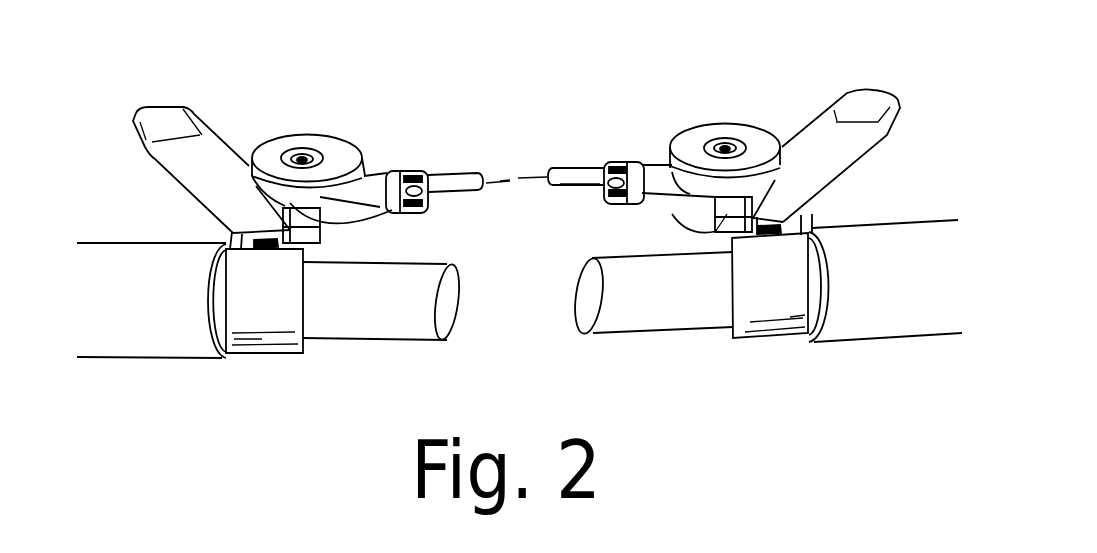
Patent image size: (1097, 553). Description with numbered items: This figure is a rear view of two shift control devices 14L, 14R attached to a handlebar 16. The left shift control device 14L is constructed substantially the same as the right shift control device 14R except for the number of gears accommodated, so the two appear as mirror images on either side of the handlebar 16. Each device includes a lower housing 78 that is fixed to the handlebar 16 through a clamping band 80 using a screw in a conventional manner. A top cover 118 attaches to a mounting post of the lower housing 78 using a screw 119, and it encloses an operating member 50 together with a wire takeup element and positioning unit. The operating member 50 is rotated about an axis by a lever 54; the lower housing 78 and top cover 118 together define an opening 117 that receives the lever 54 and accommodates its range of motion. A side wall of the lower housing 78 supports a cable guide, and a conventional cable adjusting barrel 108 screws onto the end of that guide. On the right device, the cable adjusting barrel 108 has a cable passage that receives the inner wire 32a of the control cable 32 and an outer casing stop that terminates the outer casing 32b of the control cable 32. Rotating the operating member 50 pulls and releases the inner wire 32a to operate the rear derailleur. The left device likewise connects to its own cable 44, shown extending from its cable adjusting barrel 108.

The shift control device 14L is at (254, 82).
The shift control device 14R is at (702, 87).
The handlebar 16 is at (373, 312).
The control cable 32 is at (552, 174).
The inner wire 32a is at (533, 175).
The outer casing 32b is at (587, 187).
The shift control cable 44 is at (452, 173).
The operating member 50 is at (305, 224).
The lever 54 is at (180, 172).
The lower housing 78 is at (364, 228).
The clamping band 80 is at (778, 310).
The cable adjusting barrel 108 is at (408, 170).
The opening 117 is at (733, 202).
The top cover 118 is at (342, 147).
The screw 119 is at (301, 155).